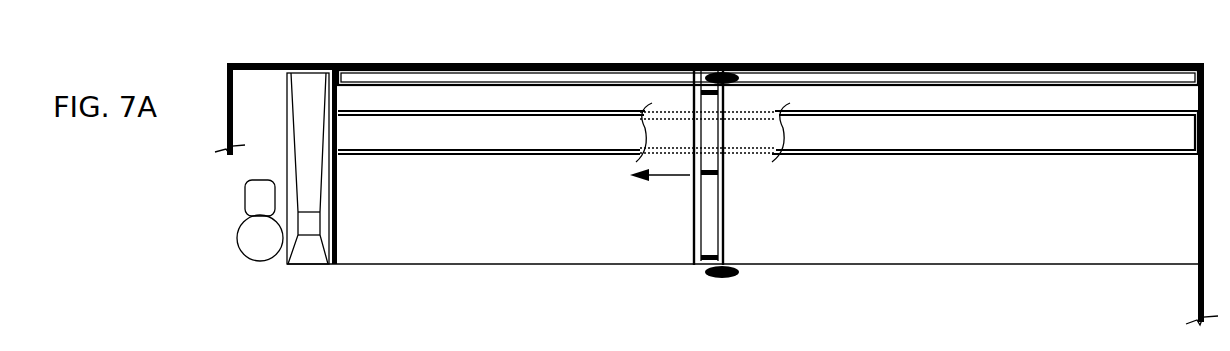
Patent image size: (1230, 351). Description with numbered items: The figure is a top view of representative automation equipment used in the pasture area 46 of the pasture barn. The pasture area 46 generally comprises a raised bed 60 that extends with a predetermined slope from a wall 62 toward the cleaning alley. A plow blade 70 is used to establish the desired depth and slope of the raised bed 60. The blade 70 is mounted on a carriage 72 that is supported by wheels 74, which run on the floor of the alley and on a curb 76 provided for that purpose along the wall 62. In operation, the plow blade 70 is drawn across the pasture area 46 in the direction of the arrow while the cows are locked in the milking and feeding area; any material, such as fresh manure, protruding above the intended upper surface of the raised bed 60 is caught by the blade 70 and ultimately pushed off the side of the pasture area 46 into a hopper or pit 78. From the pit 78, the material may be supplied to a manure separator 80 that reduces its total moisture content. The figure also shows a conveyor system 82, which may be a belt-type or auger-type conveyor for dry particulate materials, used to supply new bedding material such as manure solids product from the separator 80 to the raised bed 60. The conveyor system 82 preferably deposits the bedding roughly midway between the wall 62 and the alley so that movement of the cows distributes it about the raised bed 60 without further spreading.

The pasture area 46 is at (648, 36).
The raised bed 60 is at (490, 218).
The wall 62 is at (768, 64).
The plow blade 70 is at (692, 205).
The carriage 72 is at (726, 174).
The wheels 74 is at (730, 82).
The curb 76 is at (848, 84).
The hopper or pit 78 is at (309, 264).
The manure separator 80 is at (254, 250).
The conveyor system 82 is at (535, 142).